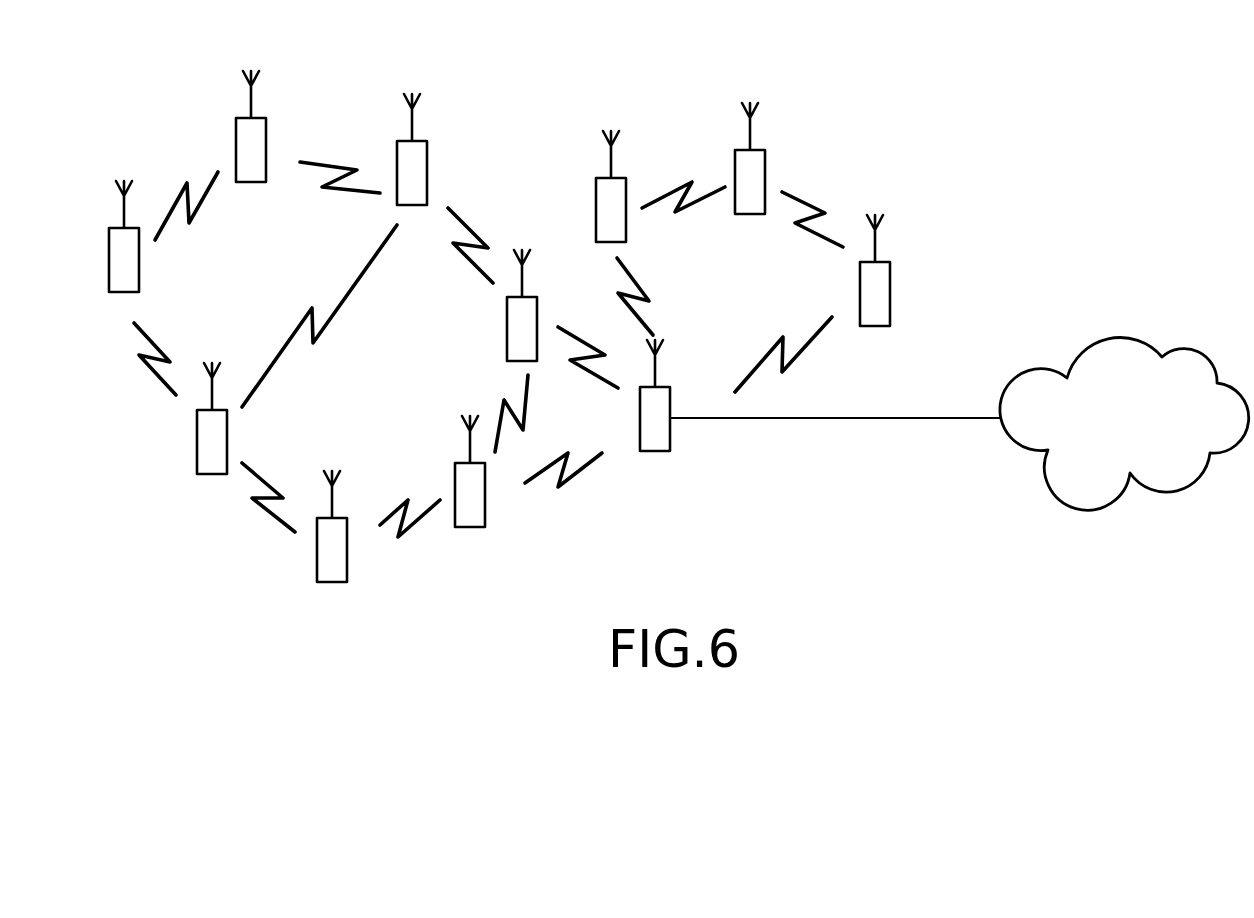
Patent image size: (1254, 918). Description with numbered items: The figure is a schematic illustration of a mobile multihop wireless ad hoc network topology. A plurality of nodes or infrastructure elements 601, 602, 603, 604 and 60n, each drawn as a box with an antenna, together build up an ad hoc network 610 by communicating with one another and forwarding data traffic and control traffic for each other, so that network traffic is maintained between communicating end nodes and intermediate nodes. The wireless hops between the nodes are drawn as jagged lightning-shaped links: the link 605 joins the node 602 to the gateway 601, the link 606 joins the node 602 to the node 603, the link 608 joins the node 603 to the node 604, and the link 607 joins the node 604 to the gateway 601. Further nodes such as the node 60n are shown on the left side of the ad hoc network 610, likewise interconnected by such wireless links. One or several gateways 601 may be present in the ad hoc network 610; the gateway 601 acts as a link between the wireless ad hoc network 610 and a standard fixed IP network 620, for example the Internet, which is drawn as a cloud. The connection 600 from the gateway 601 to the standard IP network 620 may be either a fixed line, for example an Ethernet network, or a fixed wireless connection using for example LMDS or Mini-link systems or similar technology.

The ad hoc network 610 is at (463, 102).
The node 60n is at (330, 572).
The gateway 601 is at (657, 435).
The node 602 is at (607, 204).
The node 603 is at (745, 163).
The node 604 is at (879, 286).
The wireless link 605 is at (638, 281).
The wireless link 606 is at (702, 202).
The wireless link 607 is at (812, 347).
The wireless link 608 is at (807, 198).
The connection 600 is at (913, 420).
The standard fixed IP network 620 is at (1150, 430).